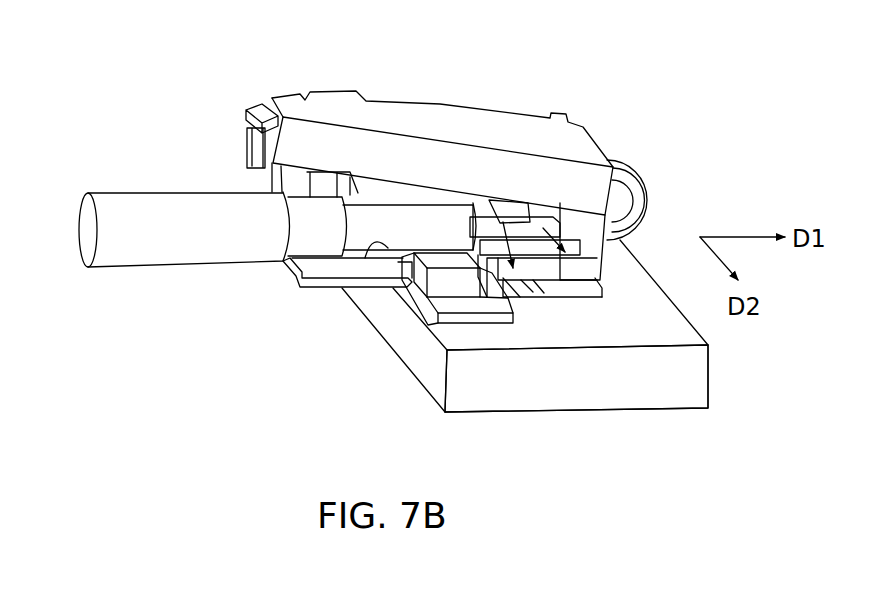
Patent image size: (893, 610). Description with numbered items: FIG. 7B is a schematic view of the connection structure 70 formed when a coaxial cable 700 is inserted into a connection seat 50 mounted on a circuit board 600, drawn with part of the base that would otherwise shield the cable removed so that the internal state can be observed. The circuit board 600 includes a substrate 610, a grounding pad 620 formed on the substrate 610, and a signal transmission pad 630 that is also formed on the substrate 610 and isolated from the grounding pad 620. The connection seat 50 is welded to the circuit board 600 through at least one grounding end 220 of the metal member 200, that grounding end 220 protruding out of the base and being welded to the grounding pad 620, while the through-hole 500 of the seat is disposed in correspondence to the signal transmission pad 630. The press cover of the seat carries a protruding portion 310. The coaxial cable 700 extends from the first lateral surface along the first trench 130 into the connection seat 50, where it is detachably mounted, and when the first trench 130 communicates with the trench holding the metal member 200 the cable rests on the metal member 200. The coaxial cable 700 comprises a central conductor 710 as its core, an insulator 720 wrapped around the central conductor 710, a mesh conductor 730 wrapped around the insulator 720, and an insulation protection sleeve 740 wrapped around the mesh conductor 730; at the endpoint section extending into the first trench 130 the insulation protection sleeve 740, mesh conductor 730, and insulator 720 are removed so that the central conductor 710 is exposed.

The connection structure 70 is at (180, 76).
The connection seat 50 is at (597, 120).
The first trench 130 is at (364, 258).
The metal member 200 is at (289, 281).
The grounding end 220 is at (475, 303).
The protruding portion 310 is at (514, 217).
The through-hole 500 is at (500, 215).
The circuit board 600 is at (713, 410).
The substrate 610 is at (628, 380).
The grounding pad 620 is at (520, 300).
The signal transmission pad 630 is at (540, 296).
The coaxial cable 700 is at (78, 248).
The central conductor 710 is at (583, 232).
The insulator 720 is at (410, 230).
The mesh conductor 730 is at (318, 222).
The insulation protection sleeve 740 is at (197, 213).